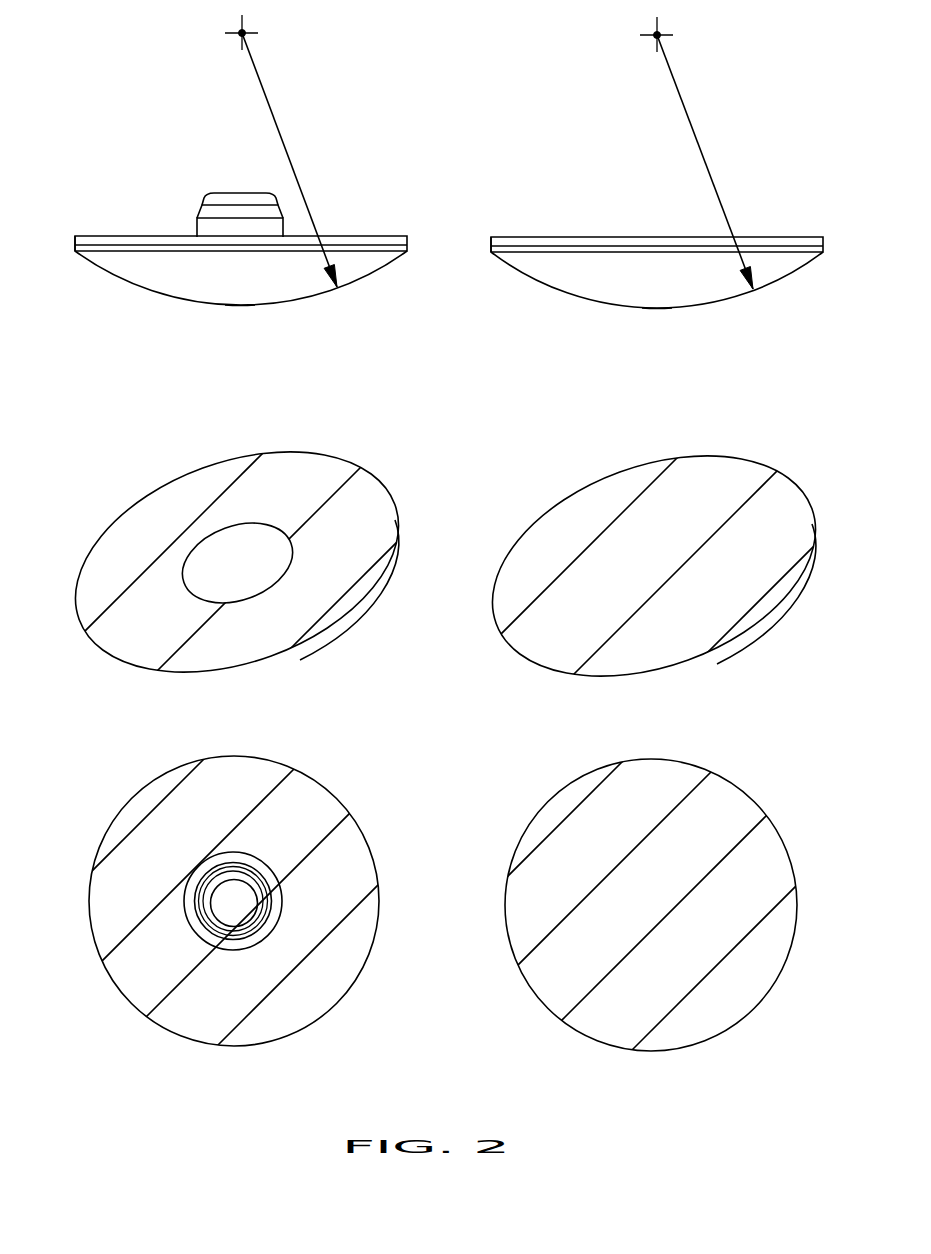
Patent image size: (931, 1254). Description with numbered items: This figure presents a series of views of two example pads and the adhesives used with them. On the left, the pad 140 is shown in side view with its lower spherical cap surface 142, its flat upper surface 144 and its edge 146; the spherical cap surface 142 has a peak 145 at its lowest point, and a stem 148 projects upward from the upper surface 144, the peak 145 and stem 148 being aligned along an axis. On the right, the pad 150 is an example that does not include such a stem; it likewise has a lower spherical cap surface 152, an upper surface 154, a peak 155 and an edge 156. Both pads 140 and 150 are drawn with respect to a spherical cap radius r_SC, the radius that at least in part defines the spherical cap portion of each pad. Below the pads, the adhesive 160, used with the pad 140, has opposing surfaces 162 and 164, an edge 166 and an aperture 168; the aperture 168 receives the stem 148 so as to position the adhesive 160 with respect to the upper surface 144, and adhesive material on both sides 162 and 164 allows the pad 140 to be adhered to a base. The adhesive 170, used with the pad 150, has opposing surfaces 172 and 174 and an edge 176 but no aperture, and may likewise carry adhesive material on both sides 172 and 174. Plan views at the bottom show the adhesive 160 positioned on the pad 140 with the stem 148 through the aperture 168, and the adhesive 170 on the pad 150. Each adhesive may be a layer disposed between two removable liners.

The pad 140 is at (231, 181).
The lower spherical cap surface 142 is at (302, 300).
The upper surface 144 is at (132, 236).
The peak 145 is at (243, 307).
The edge 146 is at (73, 253).
The stem 148 is at (200, 205).
The pad 150 is at (647, 183).
The lower spherical cap surface 152 is at (718, 302).
The upper surface 154 is at (548, 238).
The peak 155 is at (658, 308).
The edge 156 is at (493, 255).
The adhesive 160 is at (269, 725).
The surface 162 is at (358, 552).
The surface 164 is at (338, 650).
The edge 166 is at (155, 485).
The aperture 168 is at (203, 597).
The adhesive 170 is at (632, 725).
The surface 172 is at (700, 516).
The surface 174 is at (762, 657).
The edge 176 is at (558, 497).